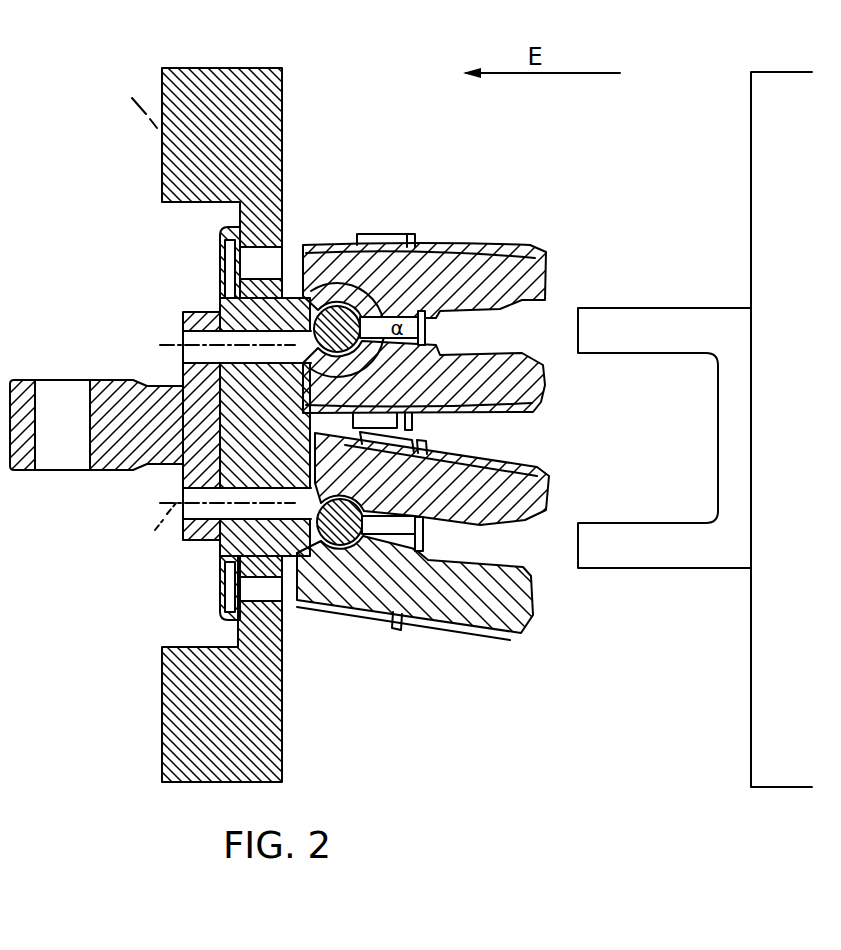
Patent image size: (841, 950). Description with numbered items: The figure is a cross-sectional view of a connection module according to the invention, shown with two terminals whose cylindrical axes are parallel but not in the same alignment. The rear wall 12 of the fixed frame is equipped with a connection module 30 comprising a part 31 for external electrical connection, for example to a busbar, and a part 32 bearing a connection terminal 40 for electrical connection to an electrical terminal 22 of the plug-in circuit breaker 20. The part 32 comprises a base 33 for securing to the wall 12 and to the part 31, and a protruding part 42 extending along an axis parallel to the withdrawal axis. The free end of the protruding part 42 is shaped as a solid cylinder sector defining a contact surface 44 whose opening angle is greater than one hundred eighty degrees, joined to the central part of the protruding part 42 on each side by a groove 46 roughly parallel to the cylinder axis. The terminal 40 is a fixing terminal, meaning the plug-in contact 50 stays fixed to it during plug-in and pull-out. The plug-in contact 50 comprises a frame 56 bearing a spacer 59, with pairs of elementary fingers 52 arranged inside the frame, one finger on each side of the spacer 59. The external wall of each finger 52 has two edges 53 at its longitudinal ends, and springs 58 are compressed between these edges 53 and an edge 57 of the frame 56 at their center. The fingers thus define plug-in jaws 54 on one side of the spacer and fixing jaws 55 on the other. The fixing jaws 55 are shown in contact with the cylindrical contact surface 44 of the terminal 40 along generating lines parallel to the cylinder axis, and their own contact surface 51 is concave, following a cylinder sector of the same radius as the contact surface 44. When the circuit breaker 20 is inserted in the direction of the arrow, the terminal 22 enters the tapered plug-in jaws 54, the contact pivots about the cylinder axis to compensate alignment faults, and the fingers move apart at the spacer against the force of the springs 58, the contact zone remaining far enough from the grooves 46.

The rear wall 12 is at (215, 130).
The plug-in circuit breaker 20 is at (827, 703).
The electrical terminal 22 is at (702, 552).
The connection module 30 is at (158, 537).
The external electrical connection part 31 is at (155, 396).
The connection module part 32 is at (182, 463).
The base 33 is at (222, 310).
The connection terminal 40 is at (220, 240).
The protruding part 42 is at (300, 290).
The contact surface 44 is at (388, 529).
The groove 46 is at (318, 498).
The plug-in contact 50 is at (486, 645).
The contact surface 51 is at (290, 572).
The elementary finger 52 is at (550, 497).
The edge 53 is at (323, 372).
The plug-in jaw 54 is at (506, 567).
The fixing jaw 55 is at (358, 575).
The frame 56 is at (408, 431).
The edge 57 is at (408, 622).
The spring 58 is at (478, 415).
The spacer 59 is at (430, 531).